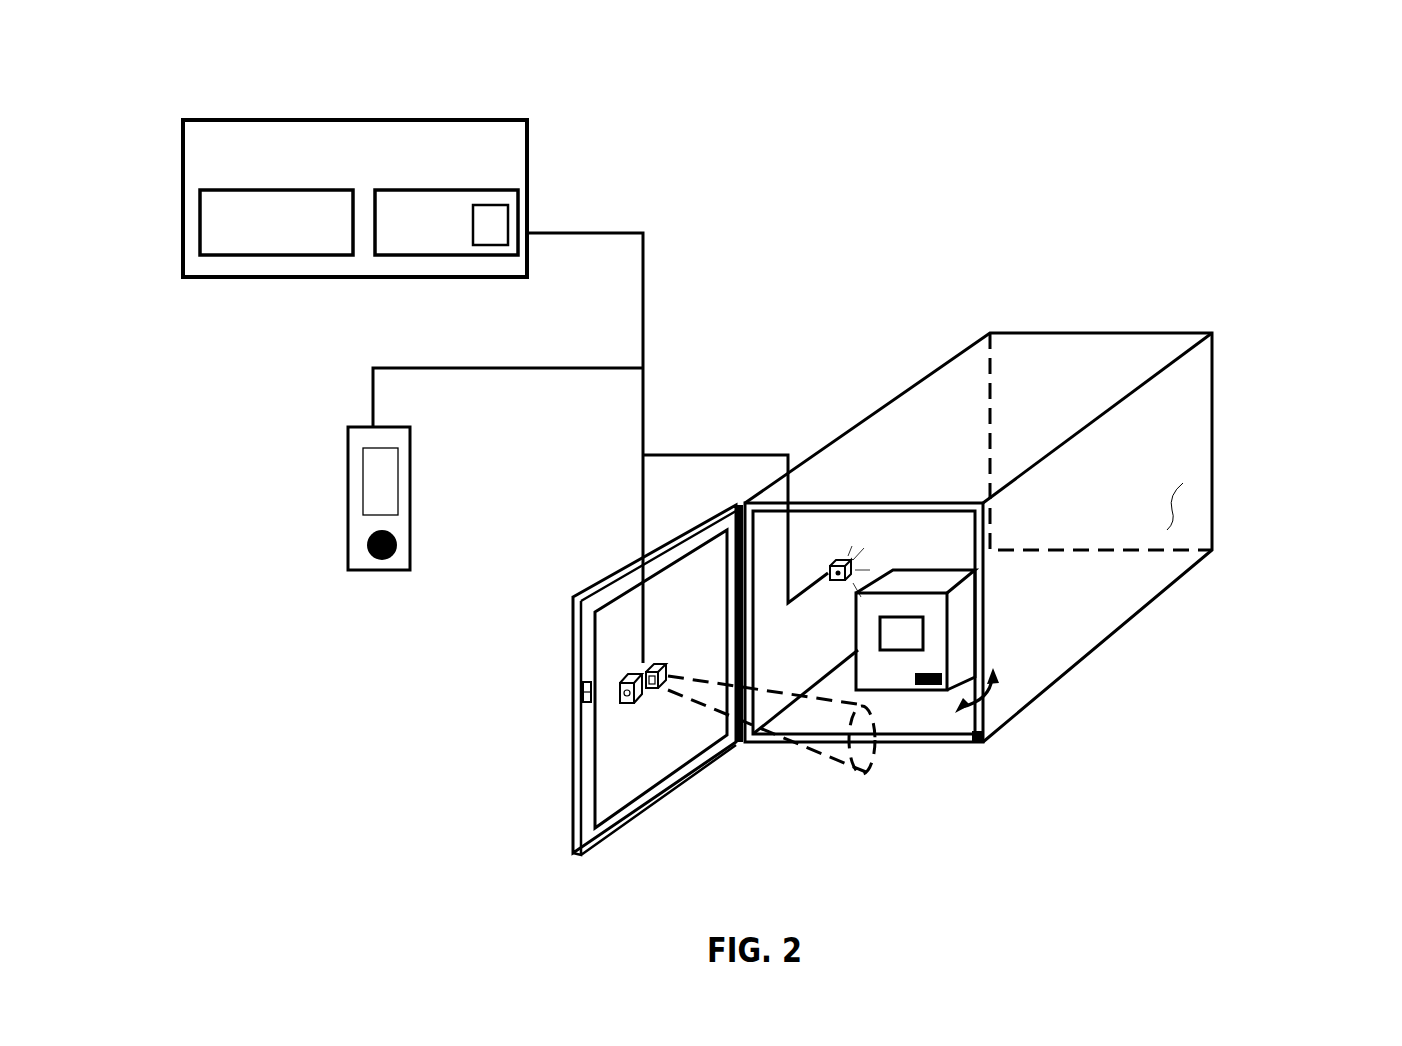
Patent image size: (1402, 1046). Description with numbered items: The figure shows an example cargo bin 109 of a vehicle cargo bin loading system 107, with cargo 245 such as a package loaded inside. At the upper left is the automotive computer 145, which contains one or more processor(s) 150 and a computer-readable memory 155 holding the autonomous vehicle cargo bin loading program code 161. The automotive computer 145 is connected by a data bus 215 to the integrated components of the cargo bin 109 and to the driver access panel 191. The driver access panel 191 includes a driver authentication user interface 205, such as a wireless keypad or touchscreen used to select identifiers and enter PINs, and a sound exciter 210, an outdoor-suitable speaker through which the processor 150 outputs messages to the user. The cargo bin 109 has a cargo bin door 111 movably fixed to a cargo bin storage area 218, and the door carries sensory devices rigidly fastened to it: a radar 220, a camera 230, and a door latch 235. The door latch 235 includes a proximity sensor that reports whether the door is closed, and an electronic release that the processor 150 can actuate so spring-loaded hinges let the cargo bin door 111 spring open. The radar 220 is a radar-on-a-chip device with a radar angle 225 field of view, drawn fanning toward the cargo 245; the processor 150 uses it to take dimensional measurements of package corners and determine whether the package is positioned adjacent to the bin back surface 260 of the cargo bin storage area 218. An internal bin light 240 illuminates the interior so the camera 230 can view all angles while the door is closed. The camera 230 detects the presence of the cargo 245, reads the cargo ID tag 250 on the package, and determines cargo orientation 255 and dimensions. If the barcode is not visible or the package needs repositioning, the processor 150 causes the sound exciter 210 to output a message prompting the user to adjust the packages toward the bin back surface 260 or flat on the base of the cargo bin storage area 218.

The vehicle cargo bin loading system 107 is at (1348, 108).
The cargo bin 109 is at (1258, 308).
The cargo bin door 111 is at (680, 540).
The automotive computer 145 is at (372, 181).
The processor 150 is at (287, 247).
The memory 155 is at (445, 247).
The autonomous vehicle cargo bin loading program code 161 is at (490, 247).
The driver access panel 191 is at (348, 497).
The driver authentication user interface 205 is at (363, 482).
The sound exciter 210 is at (373, 553).
The data bus 215 is at (645, 327).
The cargo bin storage area 218 is at (1100, 332).
The radar 220 is at (647, 670).
The radar angle 225 is at (713, 690).
The camera 230 is at (620, 705).
The door latch 235 is at (580, 683).
The internal bin light 240 is at (838, 562).
The cargo 245 is at (912, 572).
The cargo ID tag 250 is at (935, 685).
The cargo orientation 255 is at (982, 698).
The bin back surface 260 is at (1177, 517).